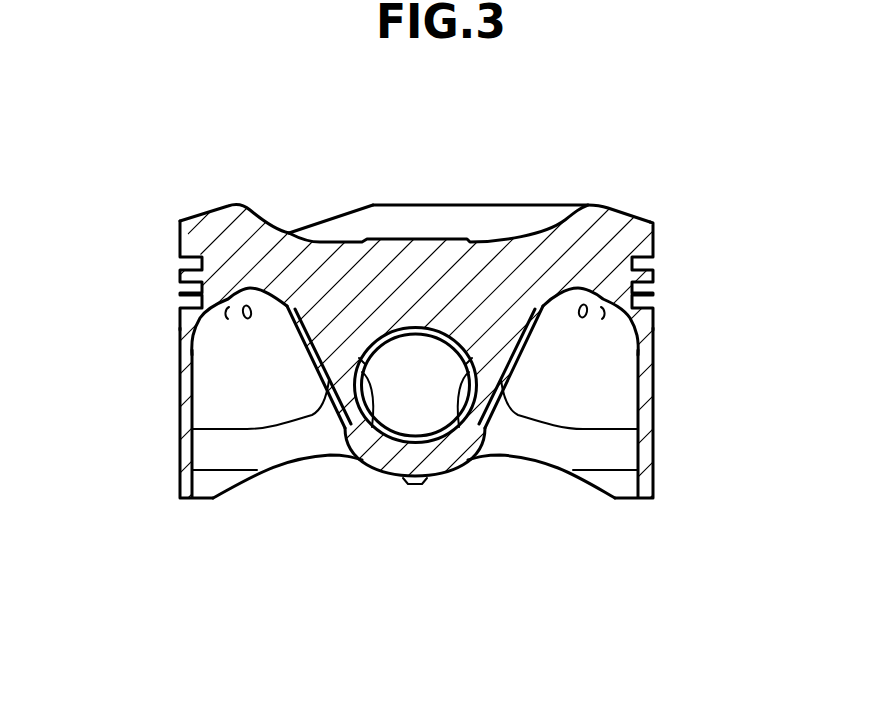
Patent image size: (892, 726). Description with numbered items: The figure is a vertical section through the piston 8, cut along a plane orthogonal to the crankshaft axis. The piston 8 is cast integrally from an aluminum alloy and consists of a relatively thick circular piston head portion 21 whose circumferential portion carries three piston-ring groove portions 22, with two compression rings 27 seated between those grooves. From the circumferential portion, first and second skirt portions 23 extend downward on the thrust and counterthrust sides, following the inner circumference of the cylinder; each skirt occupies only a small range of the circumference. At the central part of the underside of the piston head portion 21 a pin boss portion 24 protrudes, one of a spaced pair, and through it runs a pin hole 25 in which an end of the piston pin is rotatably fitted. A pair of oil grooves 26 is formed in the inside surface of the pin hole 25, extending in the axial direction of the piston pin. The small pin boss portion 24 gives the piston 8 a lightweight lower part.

The piston 8 is at (648, 197).
The piston head portion 21 is at (580, 246).
The piston-ring groove portions 22 is at (645, 309).
The skirt portions 23 is at (178, 438).
The pin boss portion 24 is at (332, 345).
The pin hole 25 is at (425, 403).
The oil groove 26 is at (365, 430).
The compression ring 27 is at (182, 300).